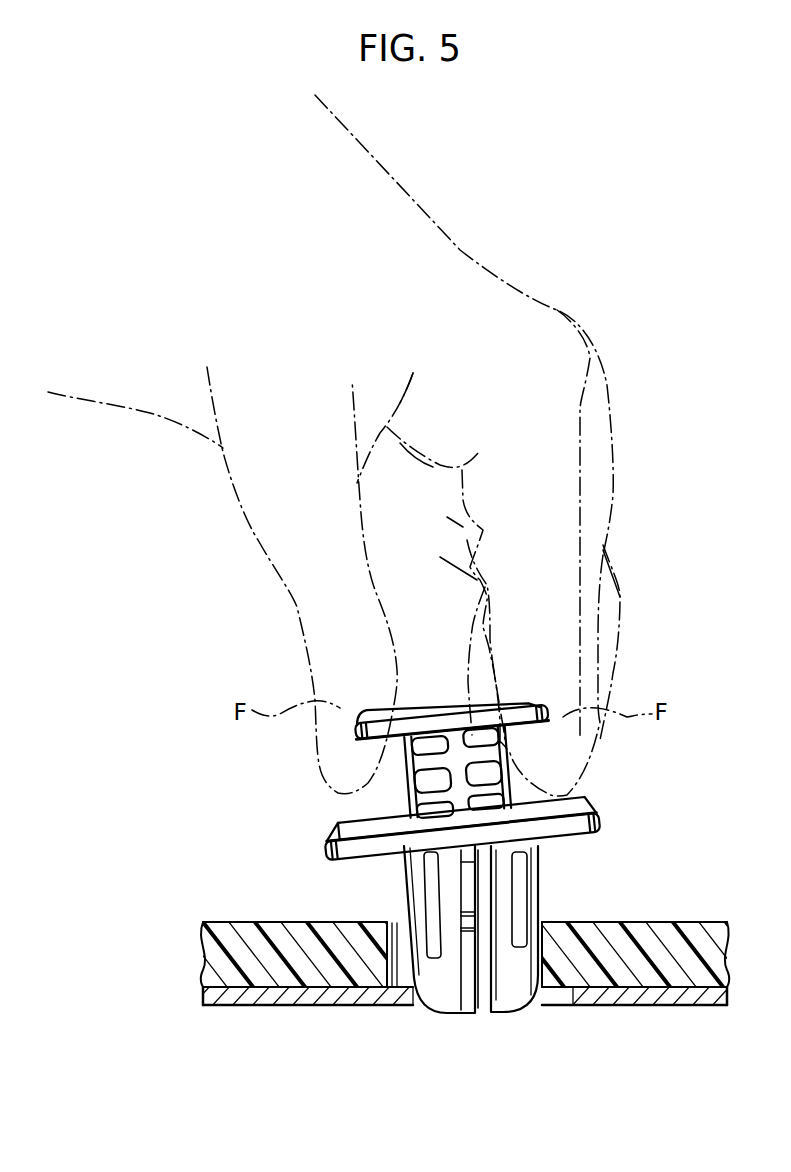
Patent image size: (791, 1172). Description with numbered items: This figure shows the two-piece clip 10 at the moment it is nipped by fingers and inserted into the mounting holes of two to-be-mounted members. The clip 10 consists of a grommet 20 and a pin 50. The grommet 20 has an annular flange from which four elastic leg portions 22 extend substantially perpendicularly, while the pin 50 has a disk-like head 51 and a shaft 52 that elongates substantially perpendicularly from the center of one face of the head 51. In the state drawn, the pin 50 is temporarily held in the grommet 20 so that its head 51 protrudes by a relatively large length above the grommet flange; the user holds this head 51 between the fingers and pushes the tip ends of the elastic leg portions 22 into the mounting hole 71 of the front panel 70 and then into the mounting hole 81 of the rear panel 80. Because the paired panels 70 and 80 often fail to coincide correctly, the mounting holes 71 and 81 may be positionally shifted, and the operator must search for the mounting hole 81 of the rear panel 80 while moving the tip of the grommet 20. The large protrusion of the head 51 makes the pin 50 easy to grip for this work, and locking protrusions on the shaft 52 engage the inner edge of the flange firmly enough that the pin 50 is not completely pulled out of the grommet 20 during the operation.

The two-piece clip 10 is at (492, 855).
The grommet 20 is at (477, 933).
The elastic leg portions 22 is at (450, 997).
The pin 50 is at (483, 730).
The head 51 is at (442, 712).
The shaft 52 is at (548, 798).
The front panel 70 is at (237, 937).
The mounting hole 71 is at (403, 927).
The rear panel 80 is at (283, 1005).
The mounting hole 81 is at (555, 1000).